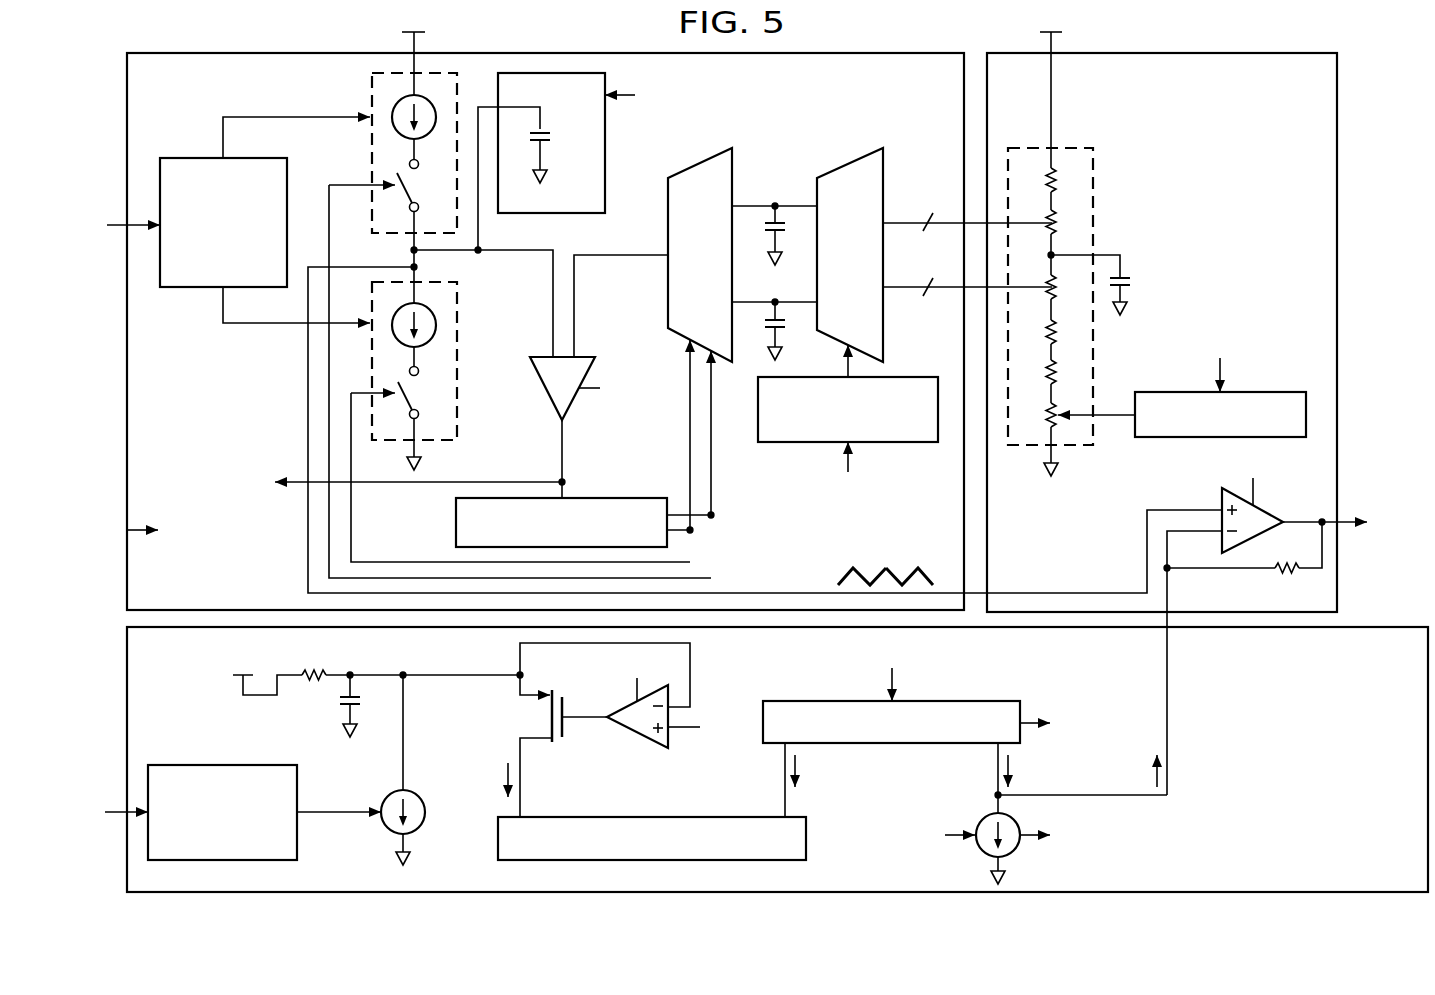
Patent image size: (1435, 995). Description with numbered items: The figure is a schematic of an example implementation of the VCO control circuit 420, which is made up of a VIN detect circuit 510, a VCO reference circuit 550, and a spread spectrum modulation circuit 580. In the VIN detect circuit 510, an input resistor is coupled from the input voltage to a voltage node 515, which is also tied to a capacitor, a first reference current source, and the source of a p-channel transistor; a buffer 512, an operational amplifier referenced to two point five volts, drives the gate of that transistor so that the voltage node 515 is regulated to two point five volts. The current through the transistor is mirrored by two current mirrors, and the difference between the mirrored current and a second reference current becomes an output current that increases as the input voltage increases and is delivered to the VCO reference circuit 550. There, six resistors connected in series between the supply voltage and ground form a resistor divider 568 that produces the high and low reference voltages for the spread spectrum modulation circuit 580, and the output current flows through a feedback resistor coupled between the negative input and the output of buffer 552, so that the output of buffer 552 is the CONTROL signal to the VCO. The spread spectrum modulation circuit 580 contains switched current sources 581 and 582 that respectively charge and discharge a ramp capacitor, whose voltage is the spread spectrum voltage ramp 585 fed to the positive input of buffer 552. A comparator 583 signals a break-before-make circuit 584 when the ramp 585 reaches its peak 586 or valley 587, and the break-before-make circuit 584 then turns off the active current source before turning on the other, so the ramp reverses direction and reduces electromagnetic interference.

The VCO control circuit 420 is at (1380, 80).
The VIN detect circuit 510 is at (195, 739).
The buffer 512 is at (636, 736).
The voltage node 515 is at (456, 680).
The VCO reference circuit 550 is at (1283, 132).
The buffer 552 is at (1220, 497).
The resistor divider 568 is at (1099, 202).
The spread spectrum modulation circuit 580 is at (195, 131).
The switched current source 581 is at (362, 100).
The switched current source 582 is at (468, 327).
The comparator 583 is at (541, 389).
The break-before-make circuit 584 is at (606, 498).
The spread spectrum voltage ramp 585 is at (307, 420).
The peak voltage 586 is at (851, 568).
The valley voltage 587 is at (902, 571).